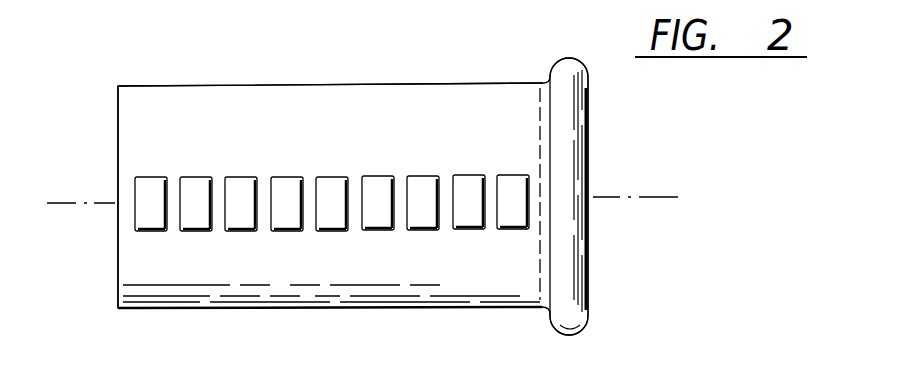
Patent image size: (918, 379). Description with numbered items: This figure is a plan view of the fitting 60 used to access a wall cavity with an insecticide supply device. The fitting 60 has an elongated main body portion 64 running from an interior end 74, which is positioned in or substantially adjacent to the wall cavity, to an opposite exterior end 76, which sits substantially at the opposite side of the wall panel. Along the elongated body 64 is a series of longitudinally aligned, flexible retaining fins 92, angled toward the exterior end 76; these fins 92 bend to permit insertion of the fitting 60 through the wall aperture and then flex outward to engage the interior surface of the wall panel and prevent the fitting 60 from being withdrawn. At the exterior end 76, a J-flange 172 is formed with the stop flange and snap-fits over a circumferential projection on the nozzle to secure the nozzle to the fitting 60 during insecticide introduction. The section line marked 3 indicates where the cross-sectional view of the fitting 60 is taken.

The fitting 60 is at (354, 192).
The elongated main body portion 64 is at (280, 105).
The interior end 74 is at (118, 117).
The exterior end 76 is at (543, 310).
The retaining fins 92 is at (240, 222).
The J-flange 172 is at (588, 105).
The section line 3- 3 is at (61, 208).